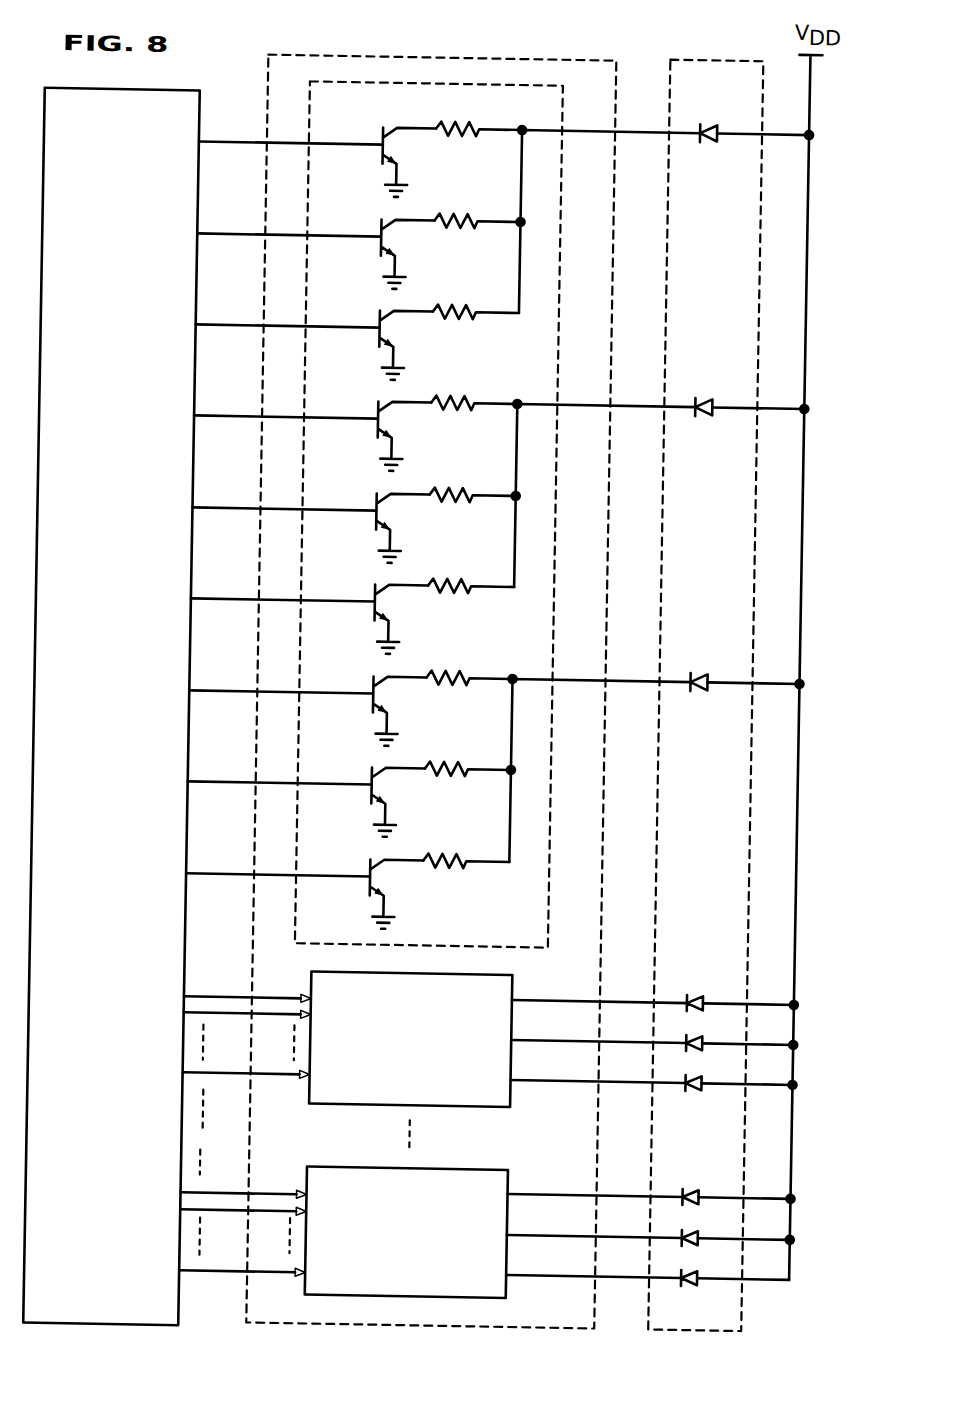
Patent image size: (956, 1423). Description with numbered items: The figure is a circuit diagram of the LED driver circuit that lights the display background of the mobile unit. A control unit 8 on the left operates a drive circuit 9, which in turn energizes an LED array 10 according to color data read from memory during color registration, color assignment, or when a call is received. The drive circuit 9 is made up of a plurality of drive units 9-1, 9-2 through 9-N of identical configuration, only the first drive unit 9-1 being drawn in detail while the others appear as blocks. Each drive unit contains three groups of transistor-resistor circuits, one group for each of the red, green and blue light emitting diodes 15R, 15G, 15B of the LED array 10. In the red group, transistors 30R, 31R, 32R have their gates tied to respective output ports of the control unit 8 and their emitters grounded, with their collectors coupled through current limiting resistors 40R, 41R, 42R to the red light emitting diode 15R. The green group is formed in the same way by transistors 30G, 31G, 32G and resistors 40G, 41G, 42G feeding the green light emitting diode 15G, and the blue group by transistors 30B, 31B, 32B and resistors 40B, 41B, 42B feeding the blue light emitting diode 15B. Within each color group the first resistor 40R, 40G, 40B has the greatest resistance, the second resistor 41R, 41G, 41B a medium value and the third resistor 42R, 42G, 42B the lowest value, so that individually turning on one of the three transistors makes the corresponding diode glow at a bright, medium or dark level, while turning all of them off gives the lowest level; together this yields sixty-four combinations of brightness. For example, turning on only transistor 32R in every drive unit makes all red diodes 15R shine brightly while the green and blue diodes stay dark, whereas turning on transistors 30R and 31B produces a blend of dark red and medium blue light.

The control unit 8 is at (167, 91).
The drive circuit 9 is at (427, 54).
The drive unit 9-1 is at (549, 532).
The drive unit 9-2 is at (517, 983).
The drive unit 9-N is at (516, 1177).
The LED array 10 is at (695, 50).
The red light emitting diode 15R is at (698, 121).
The green light emitting diode 15G is at (698, 395).
The blue light emitting diode 15B is at (698, 670).
The transistor 30R is at (371, 133).
The transistor 31R is at (371, 225).
The transistor 32R is at (371, 316).
The transistor 30G is at (371, 407).
The transistor 31G is at (371, 499).
The transistor 32G is at (371, 590).
The transistor 30B is at (371, 682).
The transistor 31B is at (371, 773).
The transistor 32B is at (371, 865).
The current limiting resistor 40R is at (439, 122).
The current limiting resistor 41R is at (439, 214).
The current limiting resistor 42R is at (439, 305).
The current limiting resistor 40G is at (439, 396).
The current limiting resistor 41G is at (439, 488).
The current limiting resistor 42G is at (439, 579).
The current limiting resistor 40B is at (439, 671).
The current limiting resistor 41B is at (439, 762).
The current limiting resistor 42B is at (439, 854).